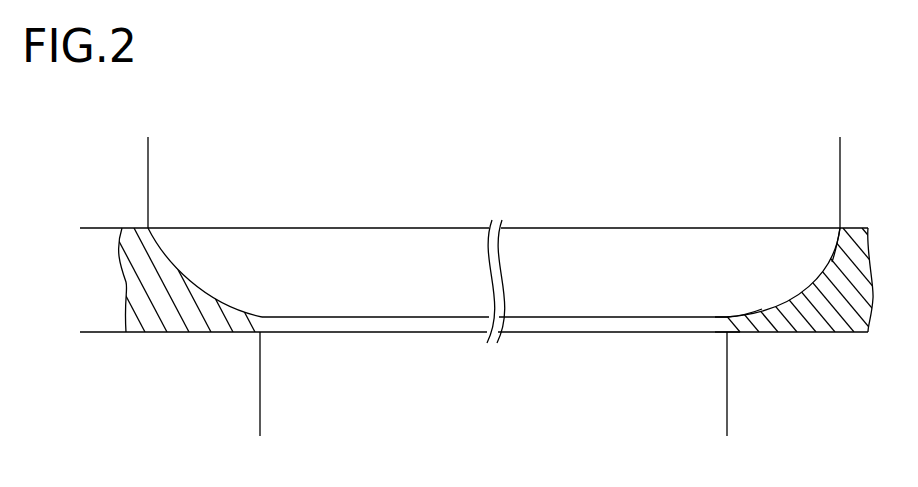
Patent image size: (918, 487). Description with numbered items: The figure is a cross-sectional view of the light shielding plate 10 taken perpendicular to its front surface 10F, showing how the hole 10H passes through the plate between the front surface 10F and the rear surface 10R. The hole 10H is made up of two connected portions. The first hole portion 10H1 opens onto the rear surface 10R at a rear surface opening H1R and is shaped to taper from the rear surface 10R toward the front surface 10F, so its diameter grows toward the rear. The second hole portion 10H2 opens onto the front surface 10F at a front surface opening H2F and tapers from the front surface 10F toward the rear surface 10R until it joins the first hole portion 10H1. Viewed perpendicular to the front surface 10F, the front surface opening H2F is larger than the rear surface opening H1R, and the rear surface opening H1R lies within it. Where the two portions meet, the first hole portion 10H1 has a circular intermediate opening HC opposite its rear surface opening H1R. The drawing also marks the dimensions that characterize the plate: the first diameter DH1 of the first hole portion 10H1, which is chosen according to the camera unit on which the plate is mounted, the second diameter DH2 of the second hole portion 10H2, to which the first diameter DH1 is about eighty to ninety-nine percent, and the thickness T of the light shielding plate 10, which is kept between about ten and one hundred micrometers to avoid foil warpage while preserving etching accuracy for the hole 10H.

The light shielding plate 10 is at (482, 228).
The front surface 10F is at (142, 227).
The rear surface 10R is at (160, 333).
The second hole portion 10H2 is at (200, 287).
The first hole portion 10H1 is at (265, 334).
The hole 10H is at (790, 292).
The front surface opening H2F is at (838, 226).
The intermediate opening HC is at (723, 317).
The rear surface opening H1R is at (728, 333).
The thickness T is at (83, 228).
The first diameter DH1 is at (727, 428).
The second diameter DH2 is at (840, 145).